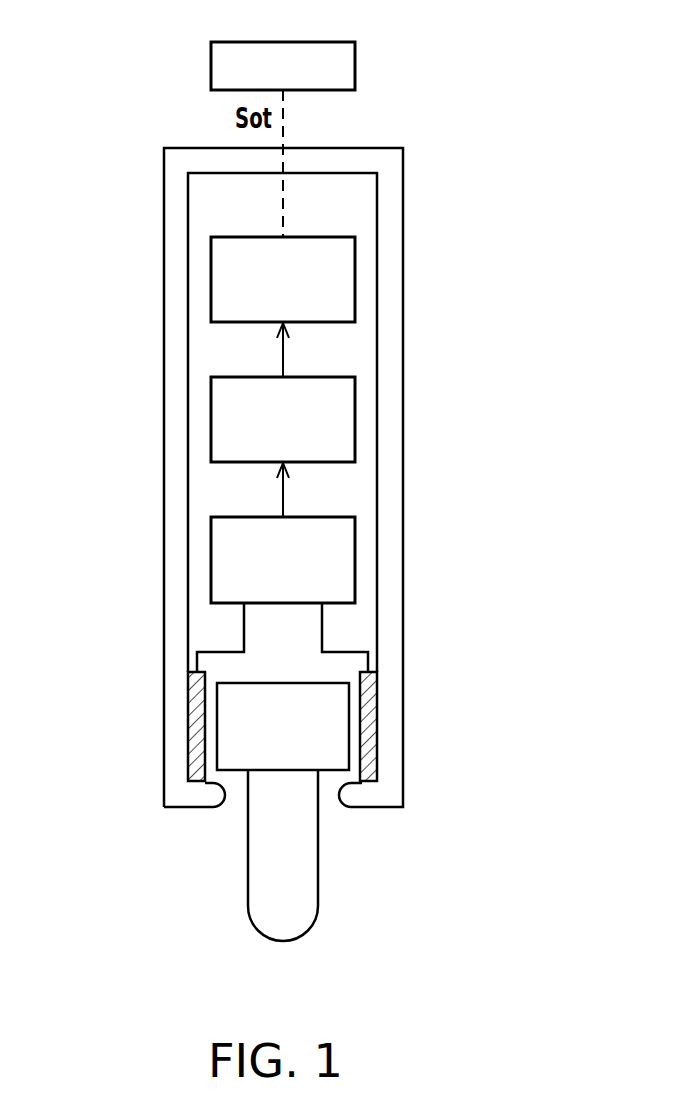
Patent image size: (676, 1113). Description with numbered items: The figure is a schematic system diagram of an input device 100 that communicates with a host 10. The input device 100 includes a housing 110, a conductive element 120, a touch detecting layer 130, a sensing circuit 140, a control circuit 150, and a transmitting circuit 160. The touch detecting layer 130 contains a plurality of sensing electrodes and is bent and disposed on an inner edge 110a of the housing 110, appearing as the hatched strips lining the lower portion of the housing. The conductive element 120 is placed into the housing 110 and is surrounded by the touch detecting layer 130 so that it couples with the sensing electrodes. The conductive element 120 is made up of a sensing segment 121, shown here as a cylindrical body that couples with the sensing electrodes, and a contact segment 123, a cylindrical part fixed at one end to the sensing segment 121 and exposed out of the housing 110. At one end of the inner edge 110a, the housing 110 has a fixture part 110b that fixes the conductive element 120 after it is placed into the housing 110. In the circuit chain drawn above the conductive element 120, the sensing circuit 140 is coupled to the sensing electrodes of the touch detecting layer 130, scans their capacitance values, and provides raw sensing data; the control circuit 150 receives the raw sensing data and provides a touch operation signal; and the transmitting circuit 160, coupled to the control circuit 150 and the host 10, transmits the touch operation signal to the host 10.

The host 10 is at (313, 42).
The input device 100 is at (312, 565).
The housing 110 is at (178, 622).
The inner edge 110a is at (196, 498).
The fixture part 110b is at (349, 793).
The conductive element 120 is at (381, 812).
The sensing segment 121 is at (323, 743).
The contact segment 123 is at (293, 888).
The touch detecting layer 130 is at (363, 690).
The sensing circuit 140 is at (312, 516).
The control circuit 150 is at (312, 376).
The transmitting circuit 160 is at (312, 236).